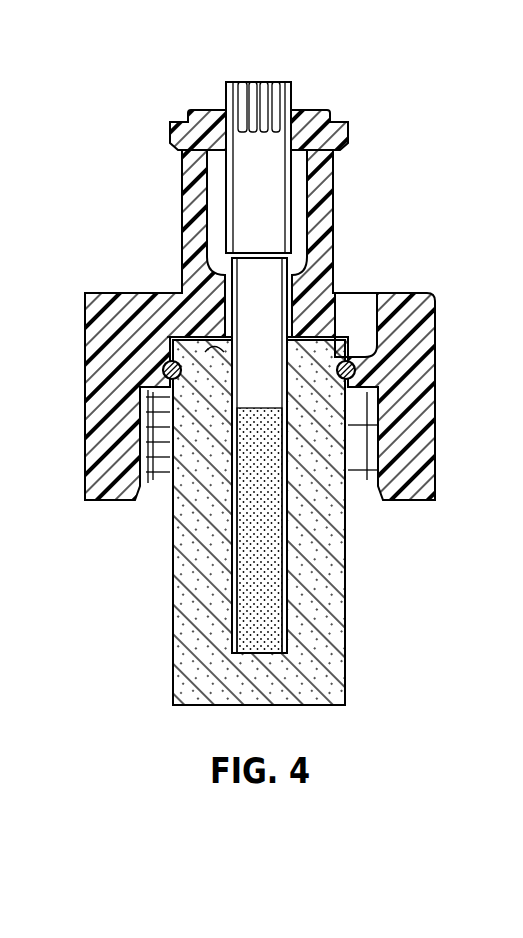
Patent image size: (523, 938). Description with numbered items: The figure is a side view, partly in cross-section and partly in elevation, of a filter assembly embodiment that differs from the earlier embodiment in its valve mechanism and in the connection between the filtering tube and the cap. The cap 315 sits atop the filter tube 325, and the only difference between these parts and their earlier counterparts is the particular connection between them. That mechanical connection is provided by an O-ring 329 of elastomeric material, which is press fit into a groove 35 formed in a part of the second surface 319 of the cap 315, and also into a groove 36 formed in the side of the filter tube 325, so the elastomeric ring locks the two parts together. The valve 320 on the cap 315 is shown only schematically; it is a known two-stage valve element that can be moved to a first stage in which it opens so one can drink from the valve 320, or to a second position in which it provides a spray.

The valve 320 is at (329, 136).
The cap 315 is at (239, 305).
The second surface 319 is at (188, 338).
The groove 35 is at (360, 353).
The O-ring 329 is at (162, 365).
The groove 36 is at (215, 350).
The filter tube 325 is at (193, 522).